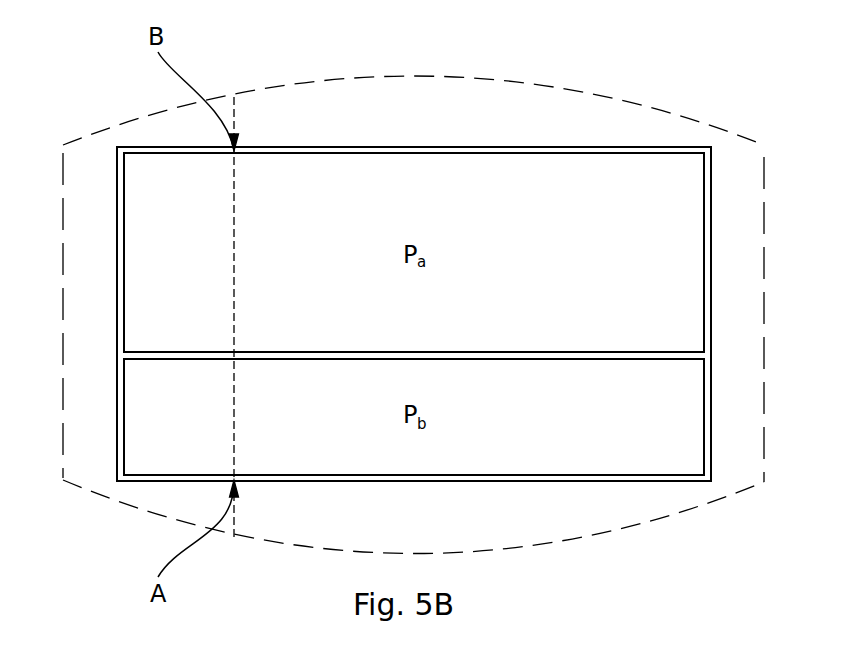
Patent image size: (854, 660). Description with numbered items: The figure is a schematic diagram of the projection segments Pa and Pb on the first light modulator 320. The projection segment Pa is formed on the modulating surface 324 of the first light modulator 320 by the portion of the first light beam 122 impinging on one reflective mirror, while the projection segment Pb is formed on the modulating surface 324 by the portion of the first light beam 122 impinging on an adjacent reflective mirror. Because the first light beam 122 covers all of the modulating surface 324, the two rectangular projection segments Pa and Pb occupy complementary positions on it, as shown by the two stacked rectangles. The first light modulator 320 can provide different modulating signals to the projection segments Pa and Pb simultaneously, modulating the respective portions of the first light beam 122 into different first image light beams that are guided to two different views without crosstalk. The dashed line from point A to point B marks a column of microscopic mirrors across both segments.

The first light modulator 320 is at (72, 87).
The modulating surface 324 is at (410, 147).
The first light beam 122 is at (594, 88).